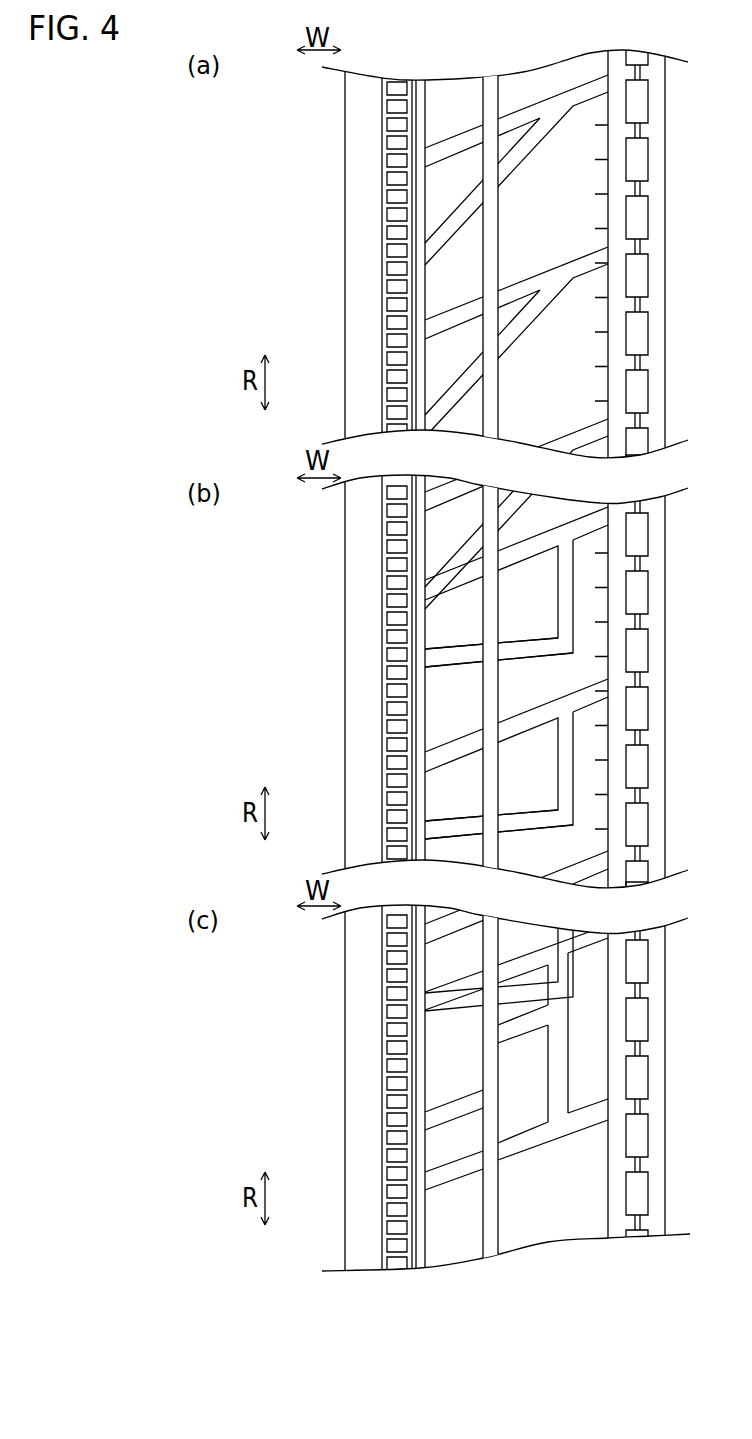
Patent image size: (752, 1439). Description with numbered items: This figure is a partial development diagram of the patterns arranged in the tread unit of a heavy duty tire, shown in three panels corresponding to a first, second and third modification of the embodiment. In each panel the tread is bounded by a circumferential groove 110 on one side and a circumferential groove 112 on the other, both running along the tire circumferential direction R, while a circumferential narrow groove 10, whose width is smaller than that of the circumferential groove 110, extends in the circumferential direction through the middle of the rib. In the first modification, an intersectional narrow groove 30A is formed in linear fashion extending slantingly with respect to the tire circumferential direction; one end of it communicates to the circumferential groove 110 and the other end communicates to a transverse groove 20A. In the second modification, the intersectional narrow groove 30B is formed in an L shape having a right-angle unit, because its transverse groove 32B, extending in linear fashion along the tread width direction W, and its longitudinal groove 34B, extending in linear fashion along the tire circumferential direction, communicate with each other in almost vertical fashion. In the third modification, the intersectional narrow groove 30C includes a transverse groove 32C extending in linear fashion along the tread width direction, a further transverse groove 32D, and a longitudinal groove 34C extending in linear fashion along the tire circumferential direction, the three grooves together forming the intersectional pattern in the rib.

The circumferential narrow groove 10 is at (492, 80).
The circumferential groove 110 is at (369, 90).
The circumferential groove 112 is at (655, 85).
The transverse groove 20A is at (516, 609).
The intersectional narrow groove 30A is at (525, 148).
The intersectional narrow groove 30B is at (516, 759).
The longitudinal groove 34B is at (516, 759).
The transverse groove 32B is at (499, 738).
The intersectional narrow groove 30C is at (516, 1057).
The transverse groove 32C is at (454, 1110).
The transverse groove 32D is at (523, 1024).
The longitudinal groove 34C is at (558, 1037).